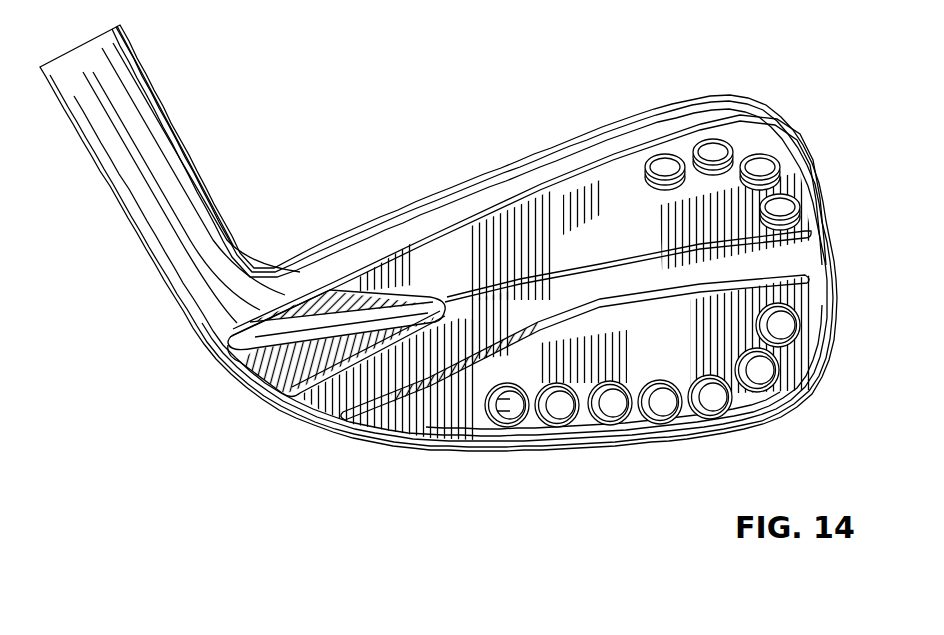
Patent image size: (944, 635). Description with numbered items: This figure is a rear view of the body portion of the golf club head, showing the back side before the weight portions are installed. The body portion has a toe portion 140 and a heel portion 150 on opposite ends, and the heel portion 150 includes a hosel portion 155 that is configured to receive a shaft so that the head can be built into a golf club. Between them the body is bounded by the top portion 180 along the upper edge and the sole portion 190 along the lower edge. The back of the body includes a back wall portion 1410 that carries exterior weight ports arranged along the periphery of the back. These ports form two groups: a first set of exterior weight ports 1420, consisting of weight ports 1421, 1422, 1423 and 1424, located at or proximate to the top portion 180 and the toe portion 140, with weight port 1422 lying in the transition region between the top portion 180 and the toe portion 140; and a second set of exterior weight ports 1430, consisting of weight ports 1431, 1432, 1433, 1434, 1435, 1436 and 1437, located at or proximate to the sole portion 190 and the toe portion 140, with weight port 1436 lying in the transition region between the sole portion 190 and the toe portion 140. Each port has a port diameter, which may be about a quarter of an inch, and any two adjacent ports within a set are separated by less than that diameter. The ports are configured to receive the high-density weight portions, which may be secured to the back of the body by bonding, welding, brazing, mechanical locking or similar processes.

The toe portion 140 is at (845, 210).
The heel portion 150 is at (132, 302).
The hosel portion 155 is at (134, 130).
The top portion 180 is at (405, 182).
The sole portion 190 is at (425, 487).
The back wall portion 1410 is at (320, 403).
The first set of exterior weight ports 1420 is at (744, 140).
The weight port 1421 is at (668, 153).
The weight port 1422 is at (698, 140).
The weight port 1423 is at (752, 154).
The weight port 1424 is at (792, 194).
The second set of exterior weight ports 1430 is at (656, 413).
The weight port 1431 is at (490, 427).
The weight port 1432 is at (545, 428).
The weight port 1433 is at (598, 428).
The weight port 1434 is at (673, 415).
The weight port 1435 is at (731, 405).
The weight port 1436 is at (777, 370).
The weight port 1437 is at (800, 312).